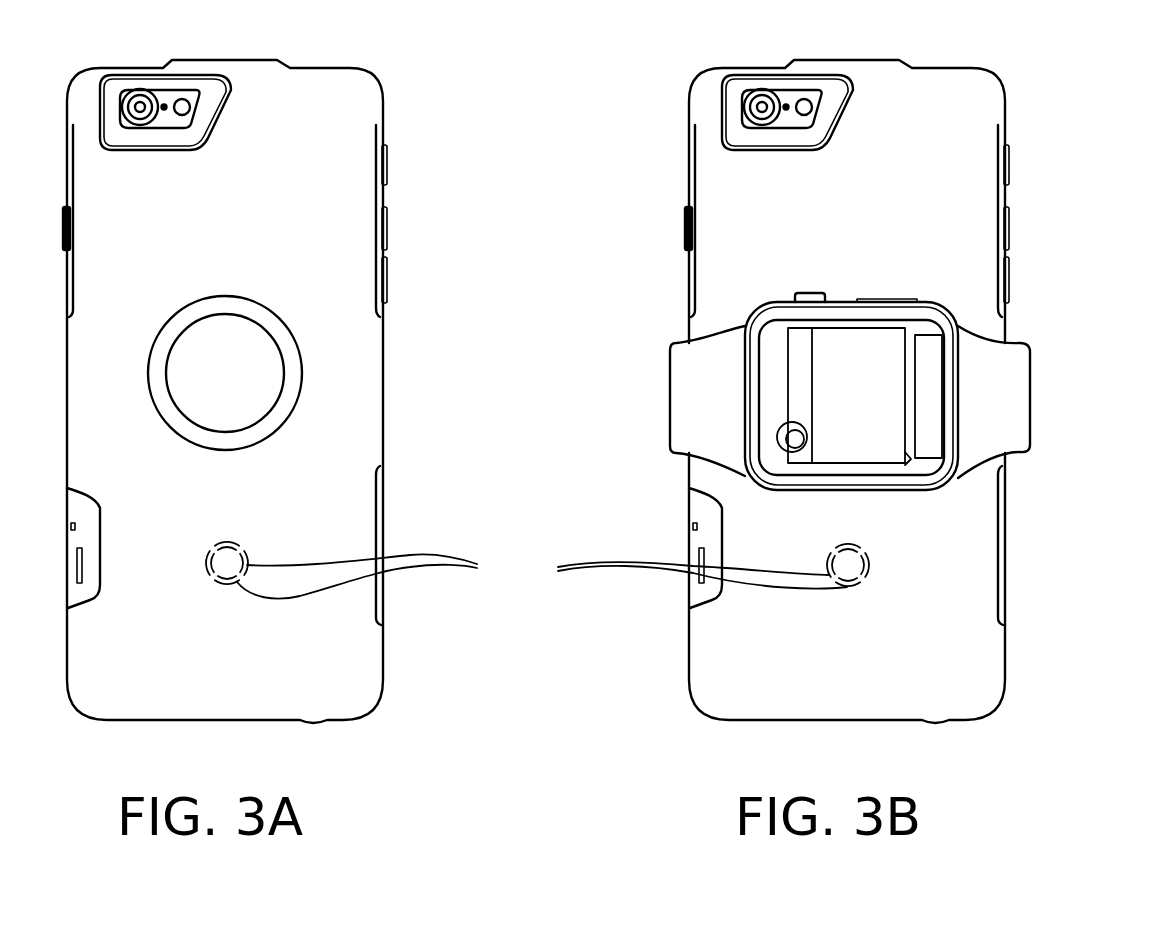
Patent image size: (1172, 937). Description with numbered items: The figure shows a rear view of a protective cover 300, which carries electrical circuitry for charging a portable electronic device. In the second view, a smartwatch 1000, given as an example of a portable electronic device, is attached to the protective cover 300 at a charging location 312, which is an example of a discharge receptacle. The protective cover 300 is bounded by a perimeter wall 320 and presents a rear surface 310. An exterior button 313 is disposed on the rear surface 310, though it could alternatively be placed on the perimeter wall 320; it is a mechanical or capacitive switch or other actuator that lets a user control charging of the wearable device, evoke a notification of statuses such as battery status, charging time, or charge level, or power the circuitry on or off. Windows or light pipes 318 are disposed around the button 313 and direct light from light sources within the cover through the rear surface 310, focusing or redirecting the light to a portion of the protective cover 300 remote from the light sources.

In FIG. 3A, the protective cover 300 is at (192, 45).
In FIG. 3B, the protective cover 300 is at (826, 38).
In FIG. 3A, the rear surface 310 is at (253, 246).
In FIG. 3B, the rear surface 310 is at (763, 268).
In FIG. 3A, the charging location 312 is at (298, 381).
In FIG. 3A, the exterior button 313 is at (228, 563).
In FIG. 3B, the exterior button 313 is at (848, 565).
In FIG. 3A, the light pipes 318 is at (382, 576).
In FIG. 3B, the light pipes 318 is at (702, 575).
In FIG. 3A, the perimeter wall 320 is at (367, 417).
In FIG. 3B, the perimeter wall 320 is at (696, 482).
In FIG. 3B, the smartwatch 1000 is at (947, 407).